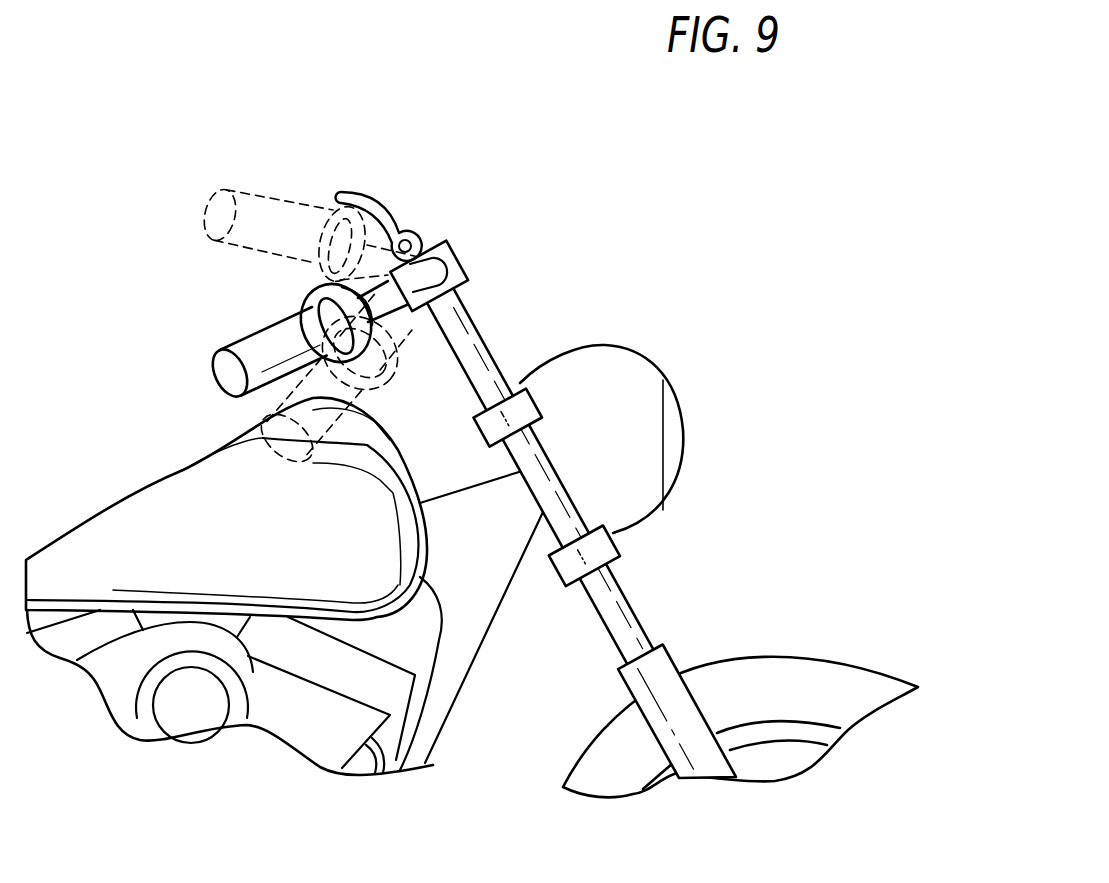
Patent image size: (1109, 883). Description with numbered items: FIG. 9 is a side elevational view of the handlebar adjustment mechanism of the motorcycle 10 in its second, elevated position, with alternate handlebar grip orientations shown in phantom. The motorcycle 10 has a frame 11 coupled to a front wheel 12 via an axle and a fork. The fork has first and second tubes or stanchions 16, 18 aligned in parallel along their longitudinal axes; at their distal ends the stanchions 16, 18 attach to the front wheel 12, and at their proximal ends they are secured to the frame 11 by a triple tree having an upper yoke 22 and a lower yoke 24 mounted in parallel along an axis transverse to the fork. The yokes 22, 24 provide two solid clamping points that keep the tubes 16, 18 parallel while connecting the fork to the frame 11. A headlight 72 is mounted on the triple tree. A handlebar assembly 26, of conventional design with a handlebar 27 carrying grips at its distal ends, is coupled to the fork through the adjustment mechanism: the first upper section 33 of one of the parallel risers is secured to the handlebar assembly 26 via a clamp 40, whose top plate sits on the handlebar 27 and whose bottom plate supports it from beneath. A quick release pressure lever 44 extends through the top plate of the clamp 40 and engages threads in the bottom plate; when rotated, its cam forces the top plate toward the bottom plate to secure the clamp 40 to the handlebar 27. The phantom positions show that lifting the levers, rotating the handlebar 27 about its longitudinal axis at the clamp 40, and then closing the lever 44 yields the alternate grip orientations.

The motorcycle 10 is at (730, 355).
The frame 11 is at (85, 687).
The front wheel 12 is at (828, 676).
The first fork tube or stanchion 16 is at (640, 610).
The second fork tube or stanchion 18 is at (563, 488).
The upper yoke 22 is at (527, 407).
The lower yoke 24 is at (608, 548).
The handlebar assembly 26 is at (413, 273).
The handlebar 27 is at (220, 218).
The first upper section of first riser 33 is at (478, 333).
The clamp 40 is at (462, 268).
The second pressure lever 44 is at (415, 276).
The headlight 72 is at (672, 447).